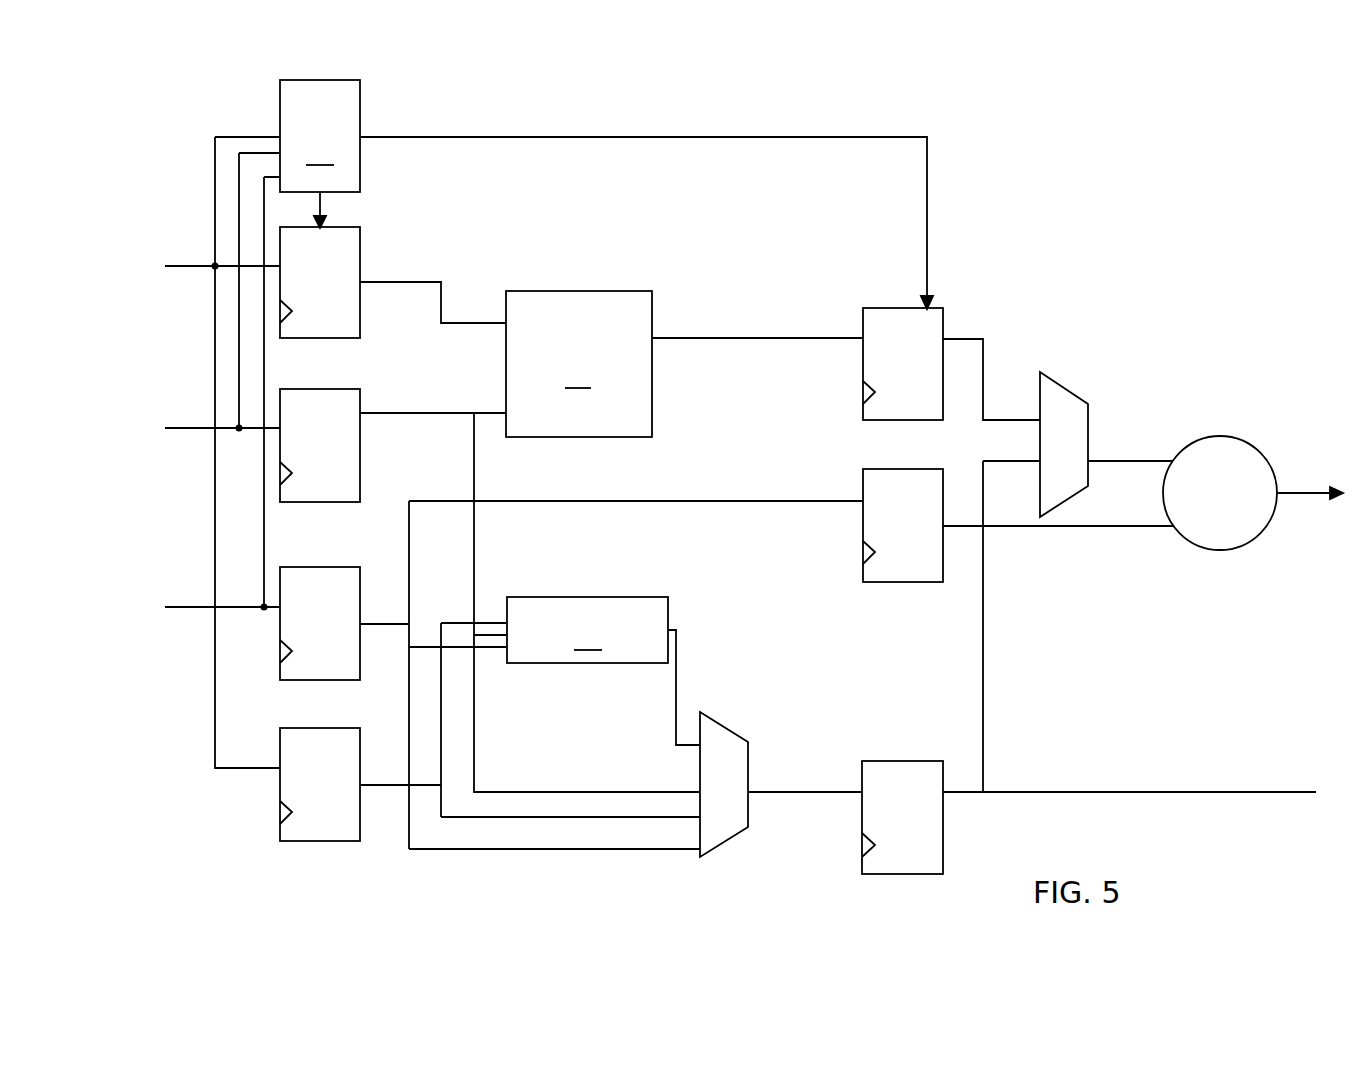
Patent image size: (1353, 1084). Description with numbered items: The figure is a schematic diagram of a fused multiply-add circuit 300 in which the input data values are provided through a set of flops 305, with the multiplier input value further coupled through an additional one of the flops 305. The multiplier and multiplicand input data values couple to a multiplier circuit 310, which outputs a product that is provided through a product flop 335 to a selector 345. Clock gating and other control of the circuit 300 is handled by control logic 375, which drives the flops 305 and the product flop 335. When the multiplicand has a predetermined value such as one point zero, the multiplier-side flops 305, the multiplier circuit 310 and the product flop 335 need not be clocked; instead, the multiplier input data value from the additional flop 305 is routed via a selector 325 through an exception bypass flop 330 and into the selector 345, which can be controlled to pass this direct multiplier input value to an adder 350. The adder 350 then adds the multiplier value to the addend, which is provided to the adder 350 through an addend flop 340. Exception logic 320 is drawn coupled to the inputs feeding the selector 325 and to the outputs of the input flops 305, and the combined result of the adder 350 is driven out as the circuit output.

The fused multiply-add datapath 300 is at (981, 107).
The control logic 375 is at (574, 194).
The flops 305 is at (337, 860).
The multiplier circuit 310 is at (684, 364).
The exception logic 320 is at (603, 671).
The selector 325 is at (728, 838).
The product flop 335 is at (944, 313).
The addend flop 340 is at (862, 527).
The selector 345 is at (1078, 395).
The adder 350 is at (1262, 533).
The exception bypass flop 330 is at (943, 817).